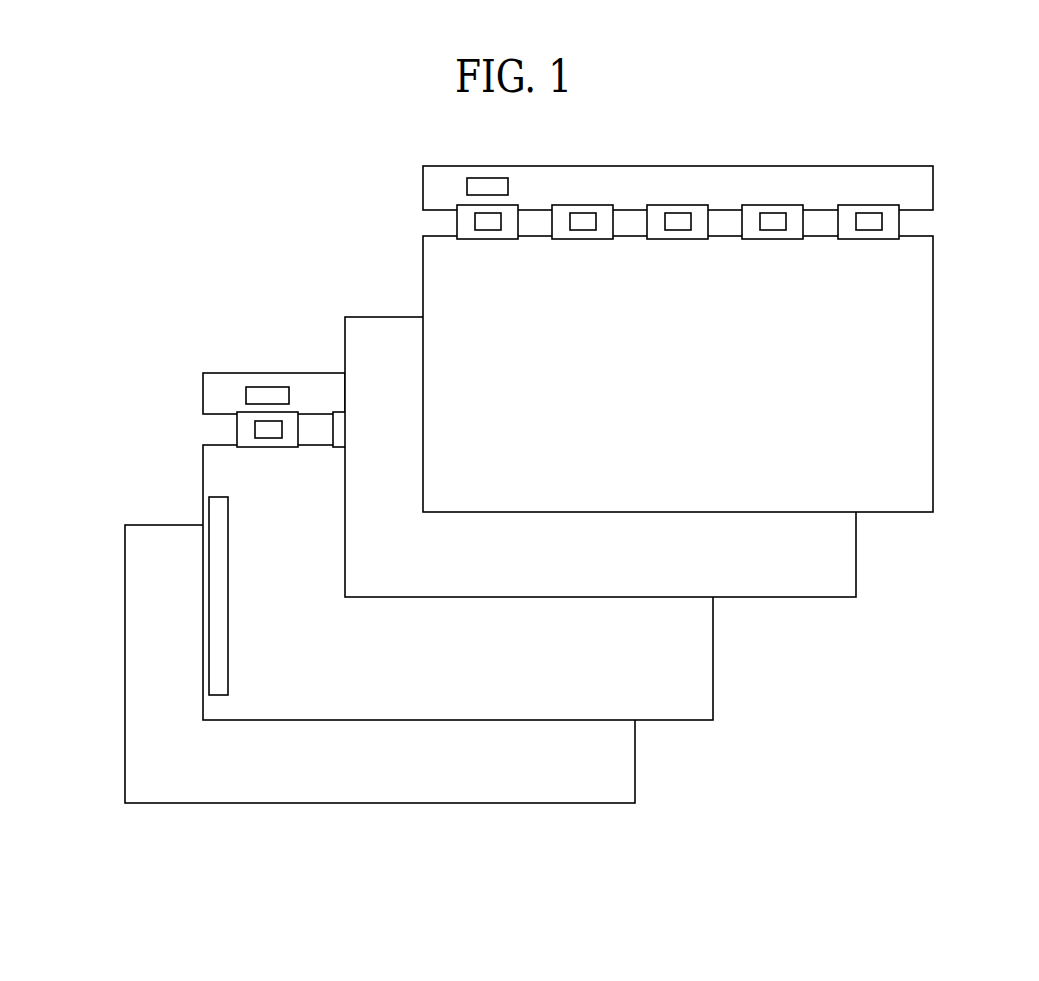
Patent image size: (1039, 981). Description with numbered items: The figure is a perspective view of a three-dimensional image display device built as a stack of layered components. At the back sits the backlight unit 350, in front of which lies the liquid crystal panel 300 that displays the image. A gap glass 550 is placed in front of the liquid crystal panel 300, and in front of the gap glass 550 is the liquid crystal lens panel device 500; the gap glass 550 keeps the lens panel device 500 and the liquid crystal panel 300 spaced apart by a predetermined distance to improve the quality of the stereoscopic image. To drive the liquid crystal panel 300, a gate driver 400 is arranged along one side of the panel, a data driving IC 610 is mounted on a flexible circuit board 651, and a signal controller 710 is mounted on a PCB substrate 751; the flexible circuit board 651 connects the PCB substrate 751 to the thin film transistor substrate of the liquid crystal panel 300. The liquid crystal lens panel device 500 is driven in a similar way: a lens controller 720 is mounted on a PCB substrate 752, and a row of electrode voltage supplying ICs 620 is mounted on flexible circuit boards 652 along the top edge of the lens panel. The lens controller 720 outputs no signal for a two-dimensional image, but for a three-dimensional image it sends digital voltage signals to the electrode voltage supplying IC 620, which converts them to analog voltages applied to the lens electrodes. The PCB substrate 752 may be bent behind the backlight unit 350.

The liquid crystal panel 300 is at (713, 655).
The backlight unit 350 is at (636, 759).
The gate driver 400 is at (209, 605).
The liquid crystal lens panel device 500 is at (933, 374).
The gap glass 550 is at (857, 553).
The data driving IC 610 is at (255, 427).
The electrode voltage supplying IC 620 is at (501, 222).
The flexible circuit board 651 is at (237, 433).
The flexible circuit board 652 is at (508, 205).
The signal controller 710 is at (246, 396).
The lens controller 720 is at (478, 178).
The PCB substrate 751 is at (241, 373).
The PCB substrate 752 is at (745, 166).